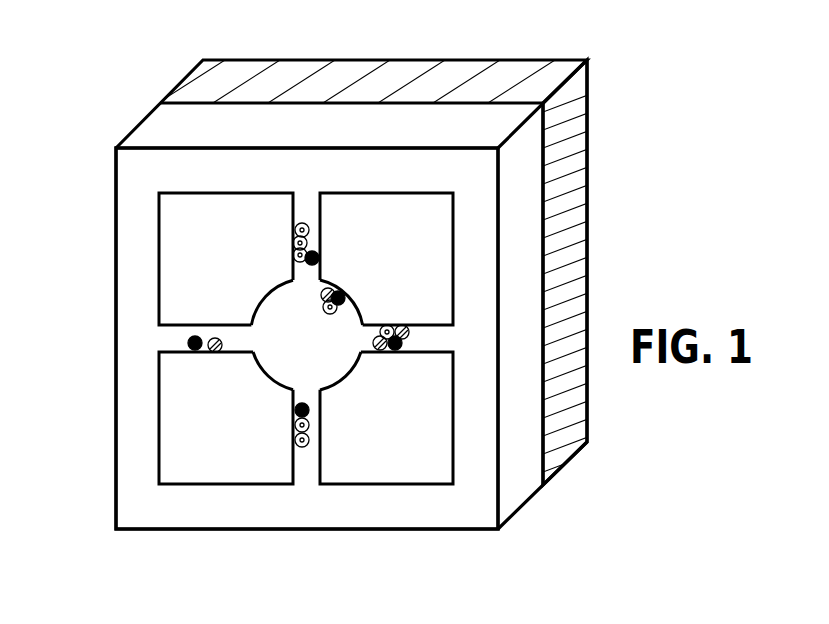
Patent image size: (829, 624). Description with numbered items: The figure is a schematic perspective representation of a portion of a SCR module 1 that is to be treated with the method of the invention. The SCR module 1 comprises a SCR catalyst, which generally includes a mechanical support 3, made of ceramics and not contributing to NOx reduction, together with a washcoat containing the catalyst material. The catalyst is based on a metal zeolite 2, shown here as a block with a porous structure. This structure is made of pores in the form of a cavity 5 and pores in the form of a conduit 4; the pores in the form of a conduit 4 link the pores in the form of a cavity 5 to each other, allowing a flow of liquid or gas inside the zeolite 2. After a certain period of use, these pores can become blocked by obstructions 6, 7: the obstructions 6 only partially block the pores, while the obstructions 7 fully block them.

The SCR module 1 is at (118, 74).
The metal zeolite 2 is at (158, 133).
The mechanical support 3 is at (568, 120).
The pores in the form of a conduit 4 is at (433, 345).
The pores in the form of a cavity 5 is at (282, 317).
The obstructions 6 is at (330, 303).
The obstructions 7 is at (310, 253).